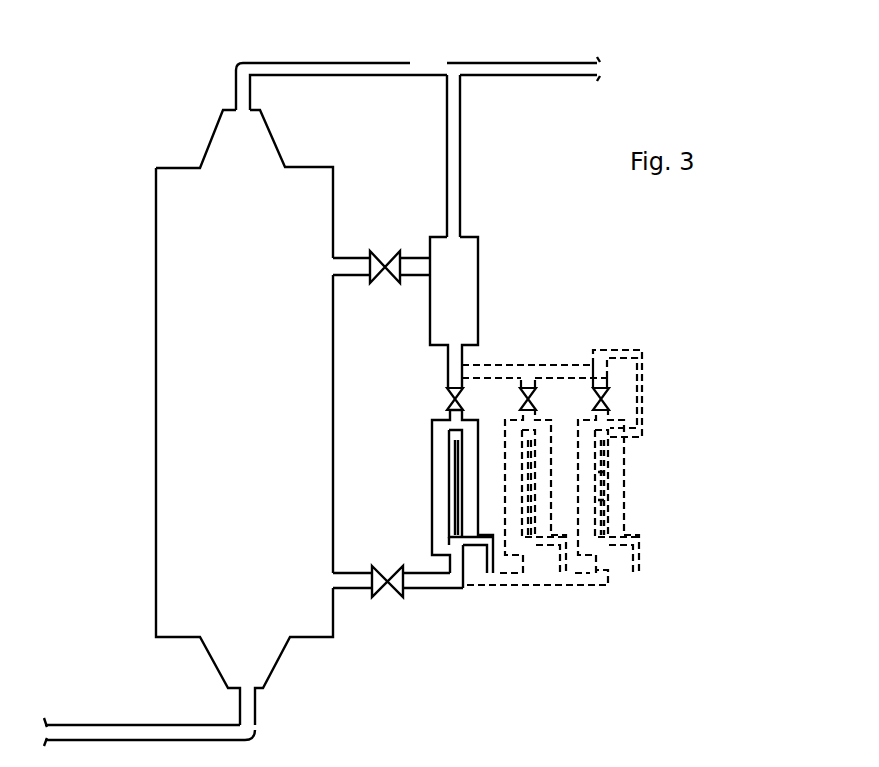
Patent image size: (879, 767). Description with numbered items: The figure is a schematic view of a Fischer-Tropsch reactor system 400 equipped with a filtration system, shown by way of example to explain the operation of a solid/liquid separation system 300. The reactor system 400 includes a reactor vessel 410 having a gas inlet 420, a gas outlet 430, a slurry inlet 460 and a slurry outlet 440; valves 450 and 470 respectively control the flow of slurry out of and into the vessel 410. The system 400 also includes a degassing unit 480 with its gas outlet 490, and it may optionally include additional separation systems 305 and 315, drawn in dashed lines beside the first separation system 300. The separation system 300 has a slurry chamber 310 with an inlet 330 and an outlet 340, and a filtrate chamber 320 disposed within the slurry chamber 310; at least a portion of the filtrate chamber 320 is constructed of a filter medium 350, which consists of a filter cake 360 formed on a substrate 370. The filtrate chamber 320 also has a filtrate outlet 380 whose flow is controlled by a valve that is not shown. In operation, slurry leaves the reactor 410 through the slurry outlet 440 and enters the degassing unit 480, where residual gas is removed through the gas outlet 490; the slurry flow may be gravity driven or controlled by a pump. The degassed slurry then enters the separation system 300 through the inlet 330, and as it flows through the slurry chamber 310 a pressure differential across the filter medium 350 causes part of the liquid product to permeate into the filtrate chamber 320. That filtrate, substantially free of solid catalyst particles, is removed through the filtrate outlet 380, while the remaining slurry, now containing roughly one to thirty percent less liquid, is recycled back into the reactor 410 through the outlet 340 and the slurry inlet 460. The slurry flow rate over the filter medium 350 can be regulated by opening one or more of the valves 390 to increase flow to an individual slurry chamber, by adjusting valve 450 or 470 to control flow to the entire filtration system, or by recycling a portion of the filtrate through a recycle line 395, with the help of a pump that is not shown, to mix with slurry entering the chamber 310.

The solid/liquid separation system 300 is at (420, 404).
The additional separation system 305 is at (559, 386).
The slurry chamber 310 is at (432, 432).
The additional separation system 315 is at (641, 454).
The filtrate chamber 320 is at (449, 452).
The inlet 330 is at (488, 362).
The outlet 340 is at (477, 588).
The filter medium 350 is at (455, 478).
The filter cake 360 is at (455, 508).
The substrate 370 is at (448, 535).
The filtrate outlet 380 is at (505, 578).
The valves 390 is at (530, 398).
The recycle line 395 is at (643, 352).
The Fischer-Tropsch reactor system 400 is at (181, 88).
The reactor vessel 410 is at (263, 397).
The gas inlet 420 is at (215, 667).
The gas outlet 430 is at (276, 145).
The slurry outlet 440 is at (347, 258).
The valve 450 is at (378, 252).
The slurry inlet 460 is at (350, 590).
The valve 470 is at (383, 597).
The degassing unit 480 is at (480, 258).
The gas outlet 490 is at (553, 62).